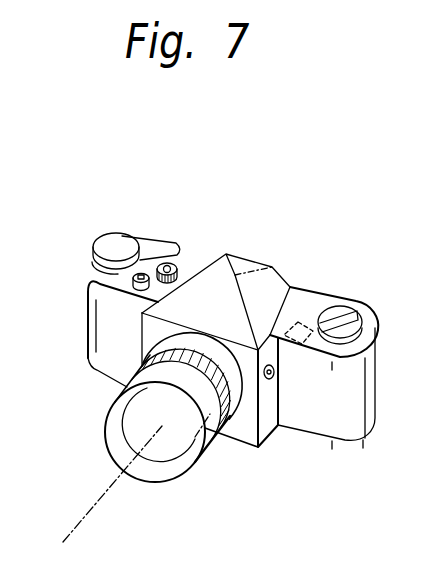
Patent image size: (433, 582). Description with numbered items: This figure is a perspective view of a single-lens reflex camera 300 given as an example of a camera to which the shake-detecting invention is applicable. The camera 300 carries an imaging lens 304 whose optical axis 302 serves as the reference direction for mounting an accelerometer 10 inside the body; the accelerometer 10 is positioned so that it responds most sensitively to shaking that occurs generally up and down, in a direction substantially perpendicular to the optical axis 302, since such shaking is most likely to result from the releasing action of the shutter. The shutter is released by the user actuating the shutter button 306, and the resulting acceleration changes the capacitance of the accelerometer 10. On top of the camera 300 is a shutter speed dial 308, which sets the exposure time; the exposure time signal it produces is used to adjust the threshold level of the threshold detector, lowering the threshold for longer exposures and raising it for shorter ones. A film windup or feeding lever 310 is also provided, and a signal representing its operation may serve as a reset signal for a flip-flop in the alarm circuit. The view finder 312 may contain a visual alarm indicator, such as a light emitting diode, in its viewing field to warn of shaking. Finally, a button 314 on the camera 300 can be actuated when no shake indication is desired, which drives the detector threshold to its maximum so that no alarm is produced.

The single-lens reflex camera 300 is at (269, 449).
The optical axis 302 is at (115, 488).
The imaging lens 304 is at (127, 427).
The shutter button 306 is at (88, 302).
The shutter speed dial 308 is at (178, 267).
The film windup or feeding lever 310 is at (153, 244).
The view finder 312 is at (254, 261).
The button 314 is at (276, 371).
The accelerometer 10 is at (298, 322).